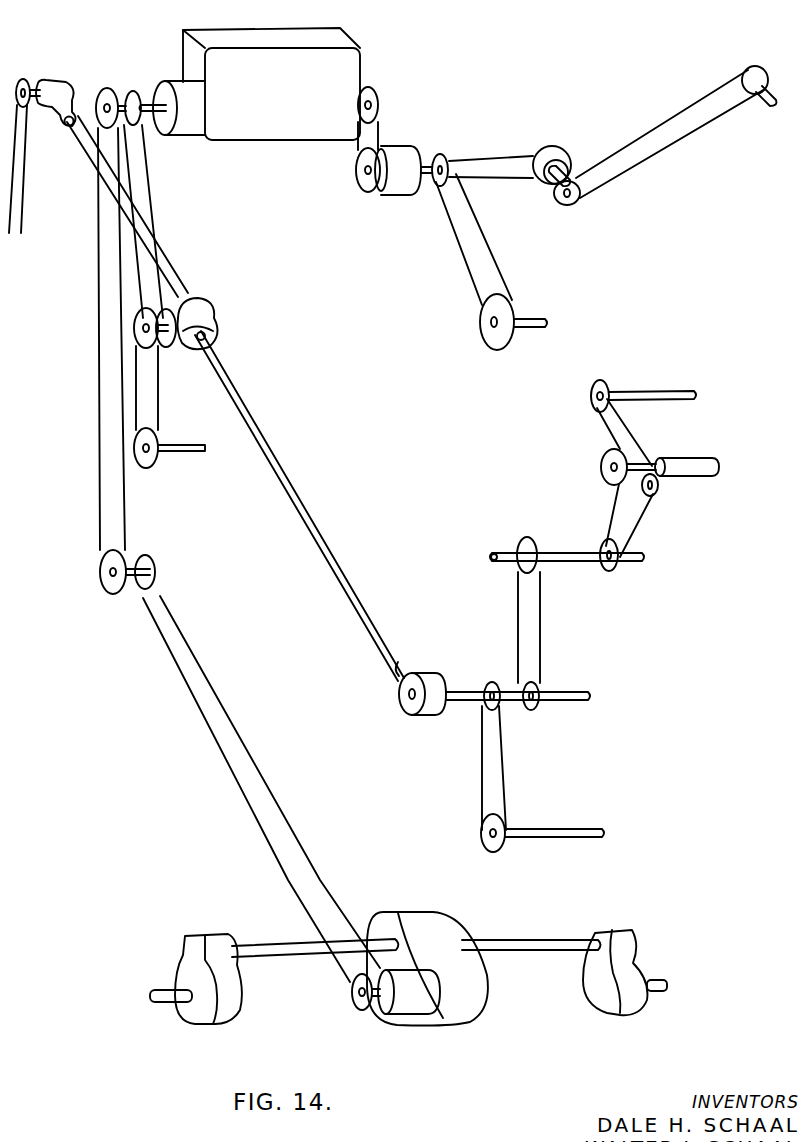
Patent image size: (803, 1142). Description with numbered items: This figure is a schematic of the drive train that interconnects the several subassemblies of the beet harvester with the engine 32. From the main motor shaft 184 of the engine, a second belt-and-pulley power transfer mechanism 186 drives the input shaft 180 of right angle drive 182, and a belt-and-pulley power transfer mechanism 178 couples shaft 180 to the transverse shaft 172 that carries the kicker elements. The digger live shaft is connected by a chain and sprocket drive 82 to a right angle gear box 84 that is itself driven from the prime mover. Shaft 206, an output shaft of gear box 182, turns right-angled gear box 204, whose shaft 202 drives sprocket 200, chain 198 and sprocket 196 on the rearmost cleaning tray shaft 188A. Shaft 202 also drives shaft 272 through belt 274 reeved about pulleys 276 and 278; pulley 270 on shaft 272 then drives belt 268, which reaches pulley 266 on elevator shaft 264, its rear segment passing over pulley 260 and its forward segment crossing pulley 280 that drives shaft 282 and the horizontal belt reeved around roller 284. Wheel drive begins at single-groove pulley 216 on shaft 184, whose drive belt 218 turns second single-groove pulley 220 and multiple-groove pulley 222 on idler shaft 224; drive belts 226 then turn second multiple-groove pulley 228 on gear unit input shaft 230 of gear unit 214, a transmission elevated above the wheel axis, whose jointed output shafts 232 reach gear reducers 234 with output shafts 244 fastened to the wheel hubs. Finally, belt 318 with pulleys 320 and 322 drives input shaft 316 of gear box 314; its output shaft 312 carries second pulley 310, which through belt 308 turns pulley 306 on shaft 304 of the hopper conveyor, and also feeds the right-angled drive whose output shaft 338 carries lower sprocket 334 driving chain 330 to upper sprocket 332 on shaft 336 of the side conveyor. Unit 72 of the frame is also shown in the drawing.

The engine 32 is at (312, 60).
The right angle gear box 84 is at (60, 95).
The chain and sprocket drive 82 is at (37, 160).
The single-groove pulley 216 is at (107, 98).
The main motor shaft 184 is at (148, 100).
The drive belt 218 is at (98, 372).
The second belt-and-pulley power transfer mechanism 186 is at (162, 218).
The input shaft 180 is at (160, 300).
The right angle drive 182 is at (207, 312).
The shaft 206 is at (355, 608).
The belt-and-pulley power transfer mechanism 178 is at (160, 400).
The transverse shaft 172 is at (180, 442).
The second single-groove pulley 220 is at (123, 590).
The multiple-groove pulley 222 is at (148, 558).
The idler shaft 224 is at (155, 575).
The drive belts 226 is at (272, 784).
The right-angled gear box 204 is at (424, 678).
The shaft 202 is at (575, 692).
The belt 274 is at (517, 660).
The pulley 278 is at (543, 690).
The shaft 272 is at (573, 562).
The pulley 276 is at (532, 545).
The pulley 270 is at (612, 572).
The sprocket 200 is at (480, 730).
The chain 198 is at (505, 772).
The sprocket 196 is at (503, 818).
The rearmost shaft 188A is at (565, 826).
The pulley 322 is at (372, 88).
The belt 318 is at (378, 135).
The pulley 320 is at (368, 192).
The input shaft 316 is at (383, 195).
The gear box 314 is at (398, 158).
The output shaft 312 is at (441, 152).
The second pulley 310 is at (455, 160).
The output shaft 338 is at (572, 170).
The lower sprocket 334 is at (570, 206).
The chain 330 is at (635, 168).
The upper sprocket 332 is at (745, 62).
The shaft 336 is at (758, 103).
The belt 308 is at (490, 255).
The pulley 306 is at (505, 300).
The shaft 304 is at (535, 320).
The pulley 266 is at (598, 382).
The shaft 264 is at (645, 393).
The belt 268 is at (642, 442).
The pulley 280 is at (602, 468).
The shaft 282 is at (628, 480).
The pulley 260 is at (660, 485).
The roller 284 is at (700, 465).
The shaft assembly 72 is at (433, 971).
The gear unit 214 is at (435, 935).
The second multiple-groove pulley 228 is at (384, 1012).
The gear unit input shaft 230 is at (358, 1008).
The jointed output shafts 232 is at (282, 943).
The gear reducers 234 is at (232, 985).
The output shafts 244 is at (176, 1003).